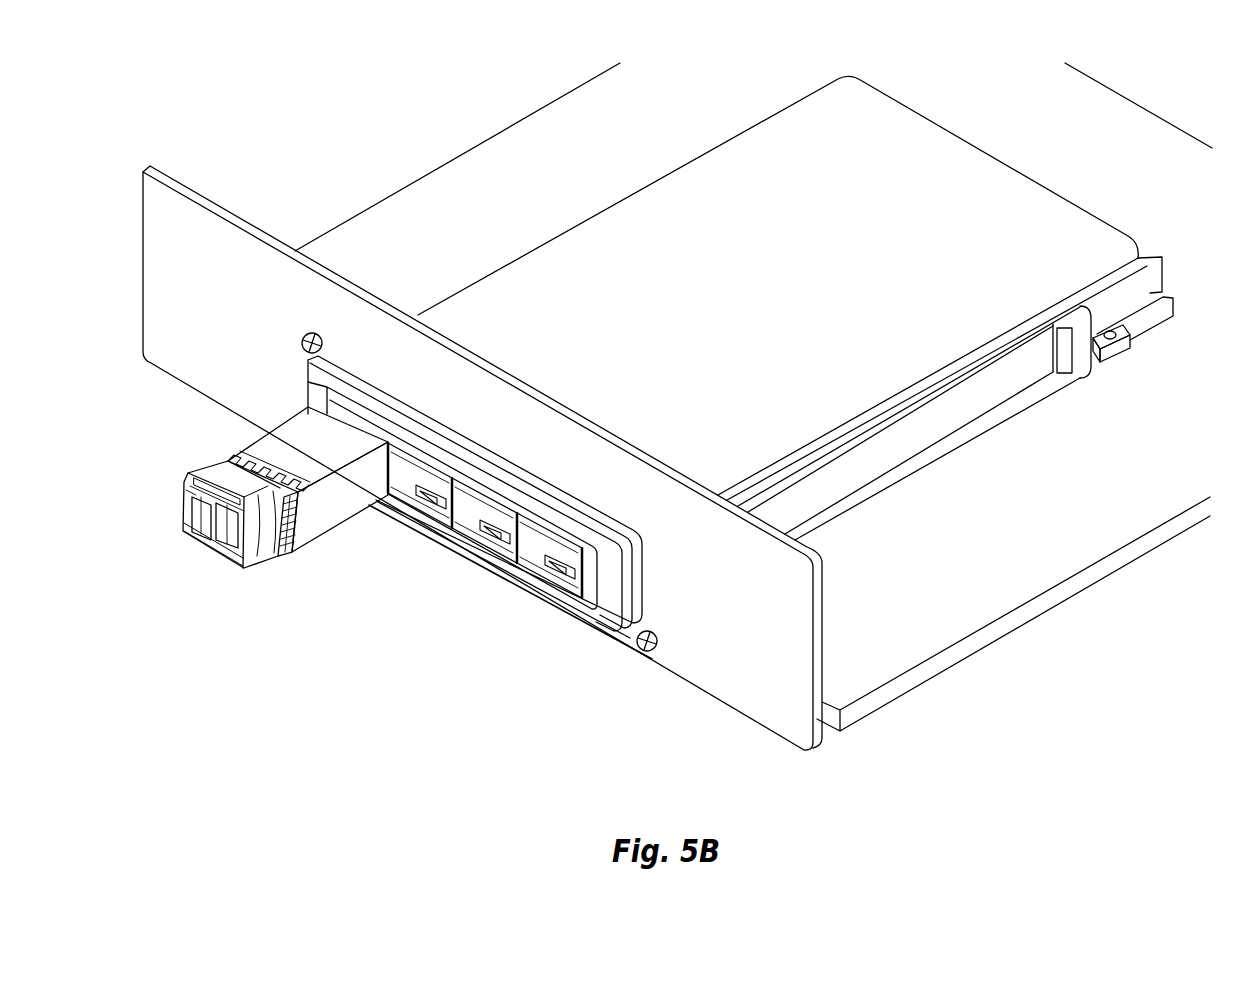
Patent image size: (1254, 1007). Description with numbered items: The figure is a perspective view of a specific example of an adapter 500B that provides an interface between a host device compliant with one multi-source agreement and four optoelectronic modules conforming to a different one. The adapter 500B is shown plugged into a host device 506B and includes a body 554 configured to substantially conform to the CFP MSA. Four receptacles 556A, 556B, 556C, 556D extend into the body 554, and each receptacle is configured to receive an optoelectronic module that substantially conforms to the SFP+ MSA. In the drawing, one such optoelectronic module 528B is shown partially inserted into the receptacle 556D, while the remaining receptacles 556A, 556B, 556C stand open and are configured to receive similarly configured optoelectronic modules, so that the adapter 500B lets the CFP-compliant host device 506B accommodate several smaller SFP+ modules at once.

The adapter 500B is at (594, 722).
The host device 506B is at (1137, 313).
The optoelectronic module 528B is at (265, 432).
The body 554 is at (805, 307).
The receptacle 556A is at (523, 601).
The receptacle 556B is at (459, 566).
The receptacle 556C is at (396, 536).
The receptacle 556D is at (364, 507).